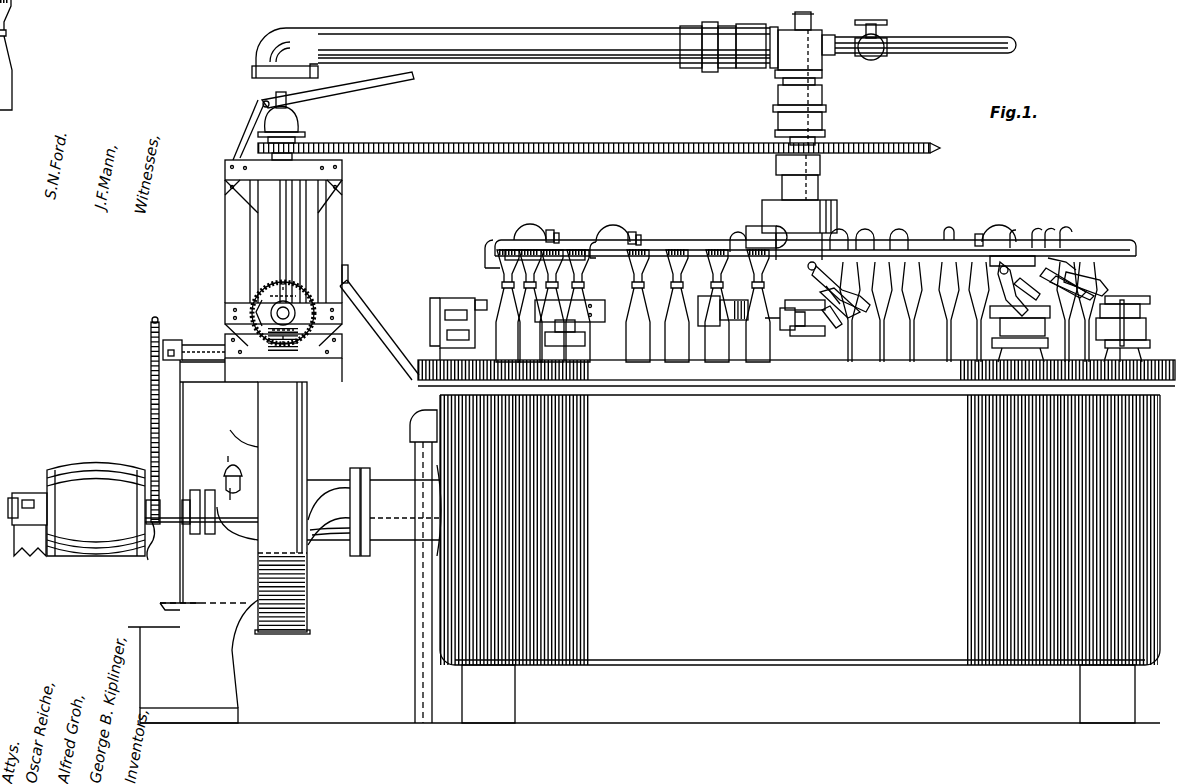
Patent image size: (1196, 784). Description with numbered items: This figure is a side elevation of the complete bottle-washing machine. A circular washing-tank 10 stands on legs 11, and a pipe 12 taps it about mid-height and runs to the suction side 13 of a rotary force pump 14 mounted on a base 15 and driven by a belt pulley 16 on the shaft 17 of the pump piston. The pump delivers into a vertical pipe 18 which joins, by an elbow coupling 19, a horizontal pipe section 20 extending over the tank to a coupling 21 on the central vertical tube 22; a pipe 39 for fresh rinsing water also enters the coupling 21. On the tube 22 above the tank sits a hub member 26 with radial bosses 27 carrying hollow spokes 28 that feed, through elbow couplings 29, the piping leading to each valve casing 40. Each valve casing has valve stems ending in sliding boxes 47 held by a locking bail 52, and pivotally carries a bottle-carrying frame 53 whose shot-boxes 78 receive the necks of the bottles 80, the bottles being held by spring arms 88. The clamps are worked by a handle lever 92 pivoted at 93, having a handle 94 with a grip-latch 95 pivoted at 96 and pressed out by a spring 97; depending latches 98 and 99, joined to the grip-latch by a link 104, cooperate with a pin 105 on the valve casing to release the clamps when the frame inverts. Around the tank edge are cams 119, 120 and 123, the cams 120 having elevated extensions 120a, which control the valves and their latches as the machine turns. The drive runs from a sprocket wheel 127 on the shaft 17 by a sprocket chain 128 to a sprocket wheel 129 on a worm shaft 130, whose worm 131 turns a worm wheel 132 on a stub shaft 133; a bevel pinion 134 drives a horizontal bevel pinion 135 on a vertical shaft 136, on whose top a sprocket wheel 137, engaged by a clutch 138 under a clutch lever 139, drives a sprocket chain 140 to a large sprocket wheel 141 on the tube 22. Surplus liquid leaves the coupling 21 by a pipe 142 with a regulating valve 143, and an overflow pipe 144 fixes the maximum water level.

The washing-tank 10 is at (800, 530).
The legs 11 is at (512, 688).
The pipe 12 is at (392, 490).
The suction side 13 is at (322, 484).
The rotary force pump 14 is at (282, 508).
The base 15 is at (178, 630).
The belt pulley 16 is at (76, 497).
The shaft 17 is at (186, 500).
The vertical pipe 18 is at (306, 244).
The elbow coupling 19 is at (282, 42).
The horizontal pipe section 20 is at (572, 50).
The coupling 21 is at (800, 55).
The central vertical tube 22 is at (818, 190).
The hub member 26 is at (838, 214).
The bosses 27 is at (750, 226).
The hollow spokes 28 is at (636, 240).
The elbow couplings 29 is at (530, 232).
The pipe 39 is at (793, 16).
The valve casing 40 is at (775, 362).
The boxes 47 is at (1146, 314).
The locking bail 52 is at (823, 318).
The bottle-carrying frame 53 is at (668, 240).
The shot-boxes 78 is at (556, 252).
The bottles 80 is at (650, 330).
The spring arm 88 is at (898, 238).
The handle lever 92 is at (1004, 278).
The pivot 93 is at (1012, 257).
The handle 94 is at (850, 284).
The grip-latch 95 is at (1106, 262).
The pivot 96 is at (917, 331).
The spring 97 is at (860, 310).
The latch 98 is at (1002, 274).
The latch 99 is at (1056, 296).
The link 104 is at (1060, 258).
The pin 105 is at (790, 328).
The cam 119 is at (735, 308).
The cams 120 is at (430, 335).
The elevated extensions 120a is at (560, 320).
The cam 123 is at (1126, 310).
The sprocket wheel 127 is at (148, 560).
The sprocket chain 128 is at (152, 412).
The sprocket wheel 129 is at (156, 322).
The worm shaft 130 is at (200, 352).
The worm 131 is at (298, 360).
The worm wheel 132 is at (312, 297).
The stub shaft 133 is at (290, 317).
The bevel pinion 134 is at (262, 304).
The horizontal bevel pinion 135 is at (300, 330).
The vertical shaft 136 is at (290, 215).
The sprocket wheel 137 is at (244, 142).
The clutch 138 is at (304, 132).
The clutch lever 139 is at (410, 78).
The sprocket chain 140 is at (556, 143).
The sprocket wheel 141 is at (941, 148).
The pipe 142 is at (935, 54).
The regulating valve 143 is at (882, 40).
The overflow pipe 144 is at (428, 420).